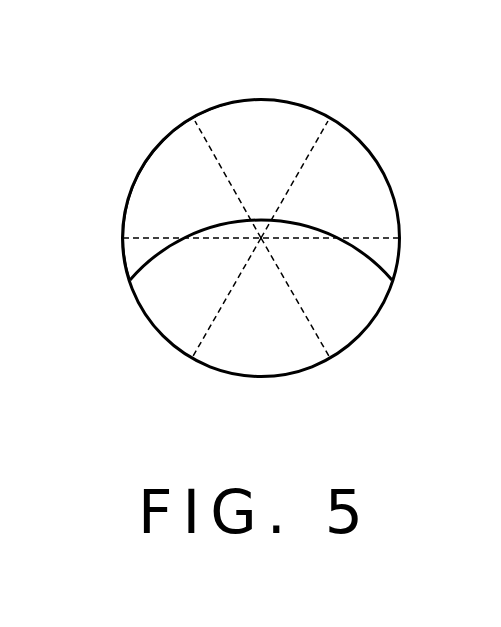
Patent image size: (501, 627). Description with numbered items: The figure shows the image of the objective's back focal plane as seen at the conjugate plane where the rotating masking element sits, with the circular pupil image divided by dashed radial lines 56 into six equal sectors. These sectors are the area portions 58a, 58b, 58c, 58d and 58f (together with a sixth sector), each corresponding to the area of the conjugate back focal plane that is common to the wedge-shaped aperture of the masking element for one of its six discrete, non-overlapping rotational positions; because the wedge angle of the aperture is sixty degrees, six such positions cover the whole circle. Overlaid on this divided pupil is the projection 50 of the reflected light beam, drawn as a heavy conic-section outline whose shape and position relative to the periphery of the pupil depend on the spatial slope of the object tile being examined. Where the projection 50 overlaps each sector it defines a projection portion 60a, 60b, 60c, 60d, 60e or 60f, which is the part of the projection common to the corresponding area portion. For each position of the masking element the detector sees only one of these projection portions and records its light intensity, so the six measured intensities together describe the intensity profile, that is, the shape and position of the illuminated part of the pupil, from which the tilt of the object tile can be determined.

The projection 50 is at (230, 337).
The radial lines 56 is at (206, 142).
The area portion 58a is at (275, 120).
The area portion 58b is at (360, 170).
The area portion 58c is at (383, 262).
The area portion 58d is at (295, 348).
The area portion 58f is at (165, 190).
The projection portion 60a is at (260, 228).
The projection portion 60b is at (292, 232).
The projection portion 60c is at (330, 267).
The projection portion 60d is at (259, 327).
The projection portion 60e is at (163, 290).
The projection portion 60f is at (238, 231).